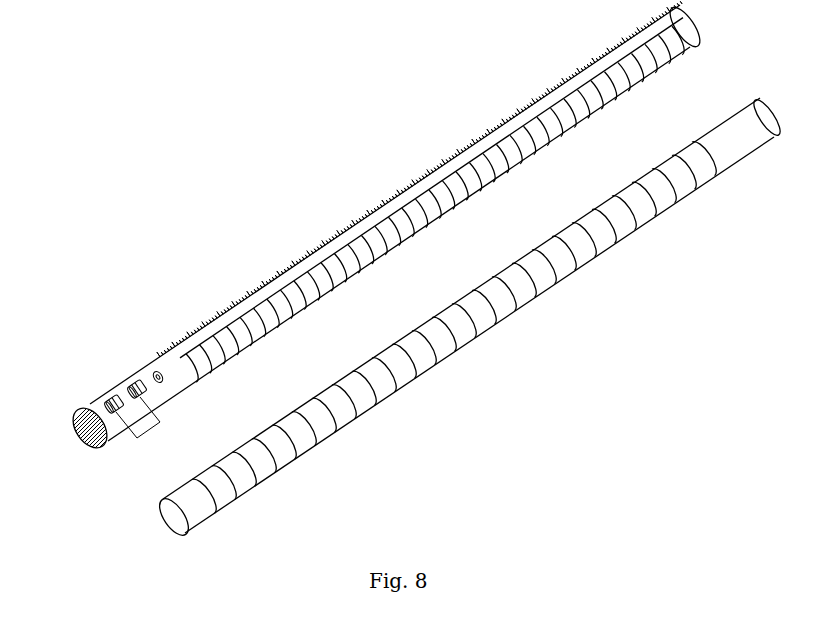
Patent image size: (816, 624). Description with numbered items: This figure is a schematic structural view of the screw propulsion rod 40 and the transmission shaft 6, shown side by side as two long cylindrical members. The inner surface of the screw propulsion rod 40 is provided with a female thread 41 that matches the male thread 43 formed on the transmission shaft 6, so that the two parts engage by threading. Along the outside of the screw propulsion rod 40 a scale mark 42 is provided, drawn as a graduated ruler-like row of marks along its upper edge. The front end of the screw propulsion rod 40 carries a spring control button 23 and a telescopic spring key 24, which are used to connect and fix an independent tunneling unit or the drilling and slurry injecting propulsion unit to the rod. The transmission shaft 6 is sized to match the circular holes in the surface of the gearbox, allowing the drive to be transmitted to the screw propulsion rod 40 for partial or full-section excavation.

The screw propulsion rod 40 is at (99, 401).
The scale mark 42 is at (164, 346).
The female thread 41 is at (207, 377).
The telescopic spring key 24 is at (137, 438).
The spring control button 23 is at (160, 384).
The transmission shaft 6 is at (238, 453).
The male thread 43 is at (243, 473).